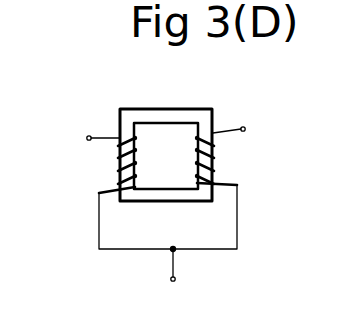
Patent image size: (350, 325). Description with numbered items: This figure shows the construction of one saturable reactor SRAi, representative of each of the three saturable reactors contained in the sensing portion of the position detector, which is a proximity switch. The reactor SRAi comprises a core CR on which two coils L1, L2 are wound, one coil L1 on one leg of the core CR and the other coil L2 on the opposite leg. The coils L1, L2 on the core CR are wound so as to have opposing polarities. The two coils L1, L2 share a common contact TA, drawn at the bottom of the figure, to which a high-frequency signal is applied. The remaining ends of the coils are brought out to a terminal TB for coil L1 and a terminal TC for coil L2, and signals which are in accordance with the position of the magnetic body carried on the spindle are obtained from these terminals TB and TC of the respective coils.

The core CR is at (178, 109).
The saturable reactor SRAi is at (233, 101).
The coil L1 is at (118, 153).
The coil L2 is at (214, 150).
The common contact TA is at (168, 246).
The terminal TB is at (87, 130).
The terminal TC is at (245, 131).